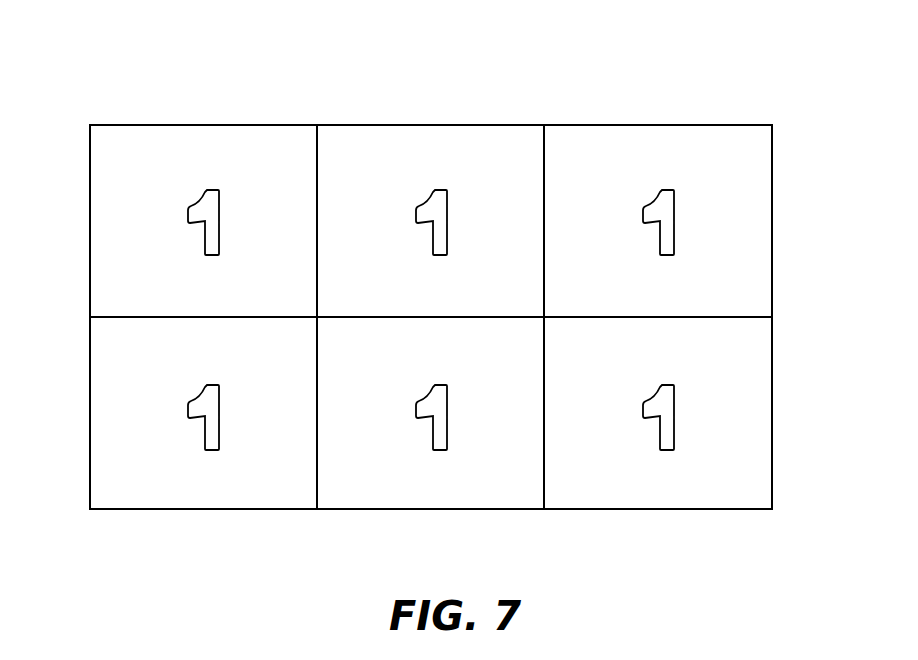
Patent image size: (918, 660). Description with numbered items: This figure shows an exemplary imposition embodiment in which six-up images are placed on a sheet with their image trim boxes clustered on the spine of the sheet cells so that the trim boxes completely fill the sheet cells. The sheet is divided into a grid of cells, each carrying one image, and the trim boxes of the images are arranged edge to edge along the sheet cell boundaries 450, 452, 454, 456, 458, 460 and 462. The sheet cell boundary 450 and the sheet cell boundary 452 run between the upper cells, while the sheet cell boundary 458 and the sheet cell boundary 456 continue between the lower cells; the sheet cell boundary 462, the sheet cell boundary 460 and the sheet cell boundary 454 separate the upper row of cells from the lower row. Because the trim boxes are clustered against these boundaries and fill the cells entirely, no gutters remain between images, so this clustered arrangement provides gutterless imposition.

The sheet cell boundary 450 is at (317, 163).
The sheet cell boundary 452 is at (544, 163).
The sheet cell boundary 454 is at (728, 317).
The sheet cell boundary 456 is at (544, 465).
The sheet cell boundary 458 is at (317, 463).
The sheet cell boundary 460 is at (358, 317).
The sheet cell boundary 462 is at (157, 317).